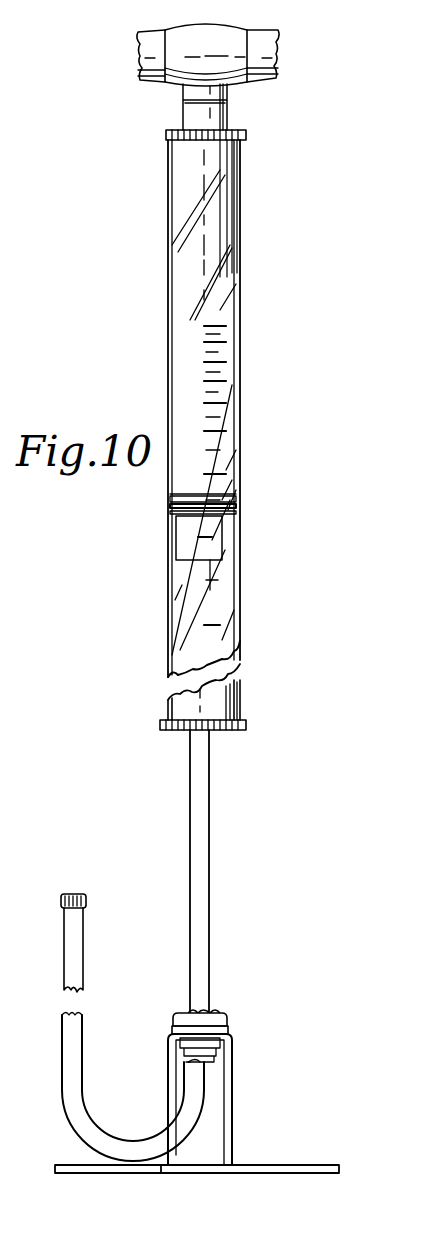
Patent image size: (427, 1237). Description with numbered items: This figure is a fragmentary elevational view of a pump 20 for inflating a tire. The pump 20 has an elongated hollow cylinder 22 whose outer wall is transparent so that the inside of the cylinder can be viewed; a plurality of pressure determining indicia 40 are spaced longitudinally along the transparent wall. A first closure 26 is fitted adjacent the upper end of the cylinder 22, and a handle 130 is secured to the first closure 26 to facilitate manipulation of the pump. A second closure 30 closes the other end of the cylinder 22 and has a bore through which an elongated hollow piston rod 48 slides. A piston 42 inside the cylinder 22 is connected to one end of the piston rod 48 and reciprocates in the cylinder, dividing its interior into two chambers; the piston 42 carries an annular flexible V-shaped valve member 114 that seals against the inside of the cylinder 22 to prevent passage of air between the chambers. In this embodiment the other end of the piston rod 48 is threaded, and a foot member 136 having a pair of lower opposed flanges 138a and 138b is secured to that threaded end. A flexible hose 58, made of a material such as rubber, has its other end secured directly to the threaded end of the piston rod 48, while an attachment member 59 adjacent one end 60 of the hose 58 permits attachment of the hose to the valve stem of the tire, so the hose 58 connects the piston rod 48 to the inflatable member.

The handle 130 is at (145, 32).
The first closure 26 is at (170, 128).
The elongated hollow cylinder 22 is at (168, 168).
The pump 20 is at (166, 210).
The pressure determining indicia 40 is at (176, 355).
The valve member 114 is at (236, 504).
The piston 42 is at (168, 552).
The second closure 30 is at (174, 732).
The piston rod 48 is at (190, 834).
The attachment member 59 is at (94, 900).
The one end of the hose 60 is at (86, 922).
The foot member 136 is at (164, 1046).
The hose 58 is at (84, 1072).
The lower opposed flange 138a is at (70, 1165).
The lower opposed flange 138b is at (304, 1142).